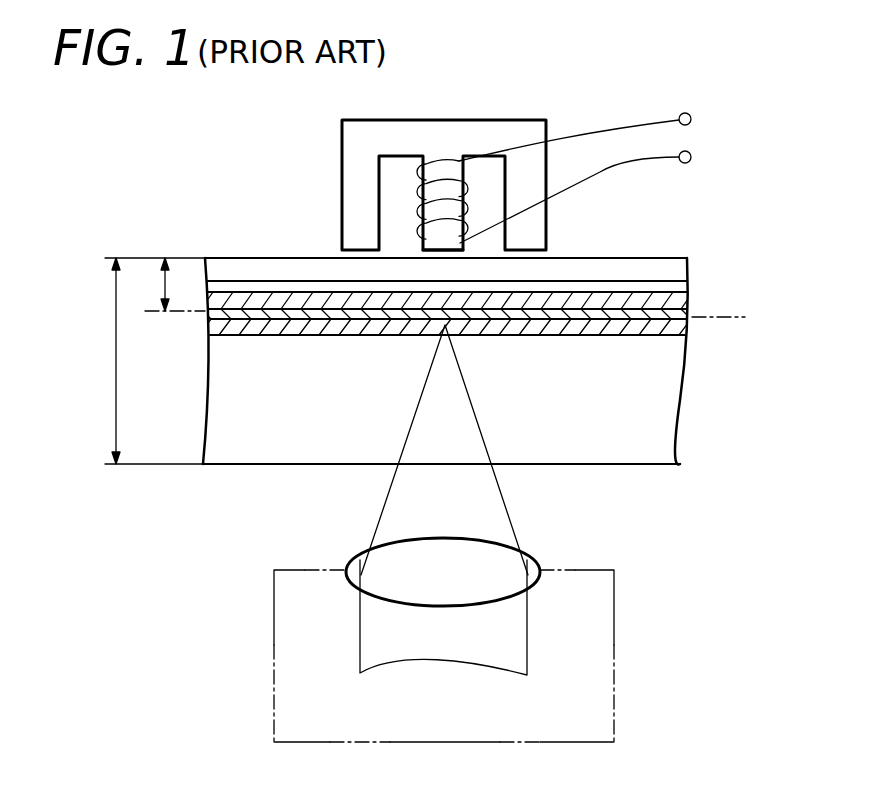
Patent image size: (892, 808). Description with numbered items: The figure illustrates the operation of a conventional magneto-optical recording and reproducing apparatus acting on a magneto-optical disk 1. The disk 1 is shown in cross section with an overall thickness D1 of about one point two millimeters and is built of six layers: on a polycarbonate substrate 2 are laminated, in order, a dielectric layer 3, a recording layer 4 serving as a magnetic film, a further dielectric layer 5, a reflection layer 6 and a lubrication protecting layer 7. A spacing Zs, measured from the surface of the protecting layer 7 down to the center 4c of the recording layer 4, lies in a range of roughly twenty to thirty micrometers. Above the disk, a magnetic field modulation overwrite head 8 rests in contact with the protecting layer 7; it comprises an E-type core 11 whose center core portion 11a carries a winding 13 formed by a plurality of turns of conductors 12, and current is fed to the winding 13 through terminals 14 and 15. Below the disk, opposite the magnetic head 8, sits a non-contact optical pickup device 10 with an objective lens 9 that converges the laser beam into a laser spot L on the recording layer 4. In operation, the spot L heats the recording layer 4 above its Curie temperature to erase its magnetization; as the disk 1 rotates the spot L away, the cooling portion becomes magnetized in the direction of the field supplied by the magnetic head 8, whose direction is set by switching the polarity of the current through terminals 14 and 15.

The magneto-optical disk 1 is at (485, 345).
The polycarbonate substrate 2 is at (475, 444).
The dielectric layer 3 is at (615, 335).
The recording layer 4 is at (645, 333).
The center of the recording layer 4c is at (464, 322).
The dielectric layer 5 is at (678, 302).
The reflection layer 6 is at (677, 289).
The lubrication protecting layer 7 is at (677, 270).
The magnetic field modulation overwrite head 8 is at (502, 163).
The objective lens 9 is at (535, 560).
The optical pickup device 10 is at (614, 642).
The E-type core 11 is at (353, 135).
The center core portion 11a is at (443, 244).
The conductors 12 is at (422, 214).
The winding 13 is at (401, 186).
The terminal 14 is at (690, 114).
The terminal 15 is at (691, 156).
The laser spot L is at (445, 325).
The spacing Zs is at (180, 284).
The thickness D1 is at (155, 361).